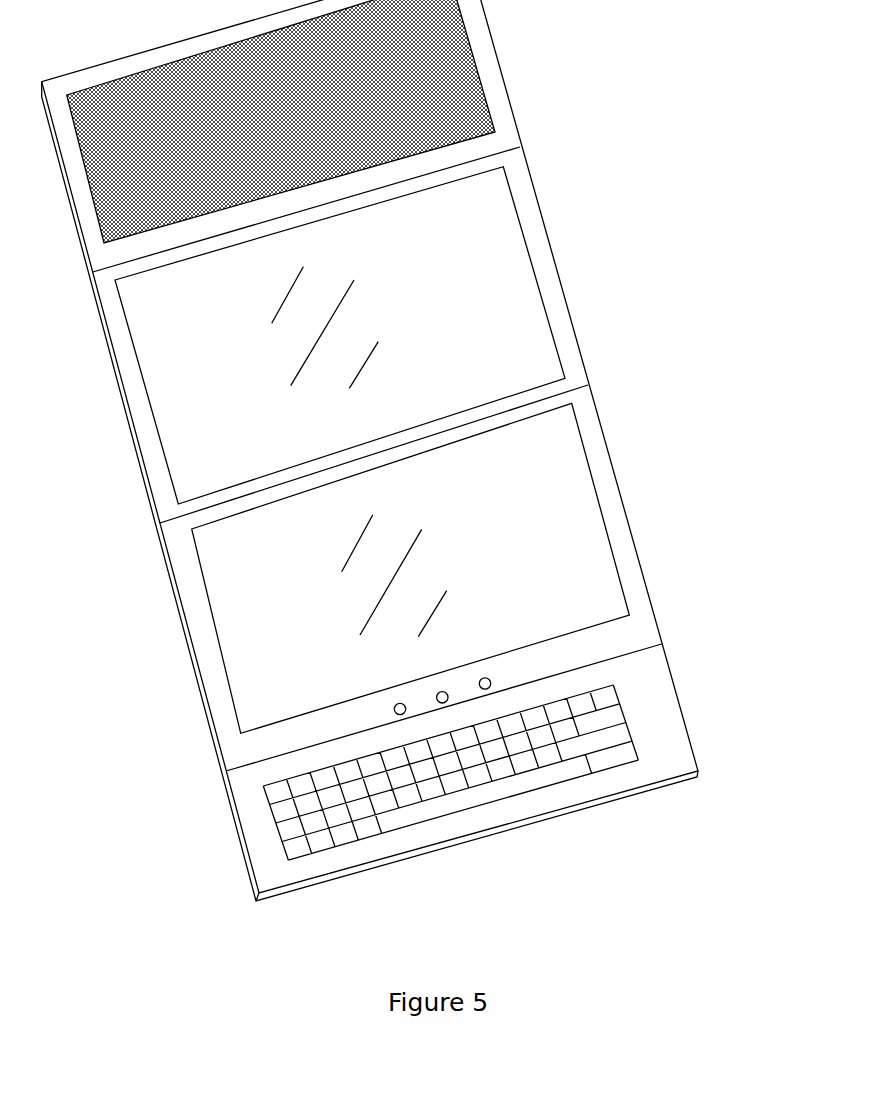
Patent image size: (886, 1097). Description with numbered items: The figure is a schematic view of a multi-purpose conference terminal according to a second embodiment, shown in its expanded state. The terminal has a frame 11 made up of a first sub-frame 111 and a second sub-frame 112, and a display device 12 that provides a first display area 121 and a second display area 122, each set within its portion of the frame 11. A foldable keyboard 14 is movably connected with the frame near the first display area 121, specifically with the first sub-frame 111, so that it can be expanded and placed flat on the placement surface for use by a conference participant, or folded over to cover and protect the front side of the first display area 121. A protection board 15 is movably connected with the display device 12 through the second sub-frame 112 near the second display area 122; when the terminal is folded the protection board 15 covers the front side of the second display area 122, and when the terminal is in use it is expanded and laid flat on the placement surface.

The frame 11 is at (409, 459).
The first sub-frame 111 is at (588, 437).
The second sub-frame 112 is at (557, 306).
The display device 12 is at (229, 452).
The first display area 121 is at (255, 562).
The second display area 122 is at (197, 417).
The foldable keyboard 14 is at (667, 723).
The protection board 15 is at (467, 83).